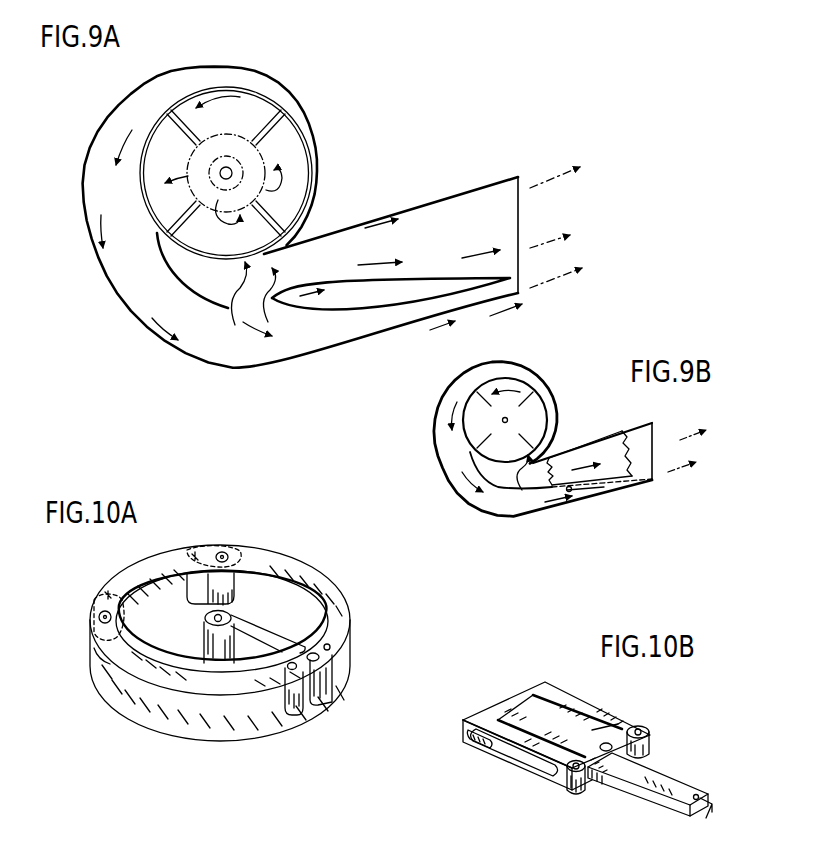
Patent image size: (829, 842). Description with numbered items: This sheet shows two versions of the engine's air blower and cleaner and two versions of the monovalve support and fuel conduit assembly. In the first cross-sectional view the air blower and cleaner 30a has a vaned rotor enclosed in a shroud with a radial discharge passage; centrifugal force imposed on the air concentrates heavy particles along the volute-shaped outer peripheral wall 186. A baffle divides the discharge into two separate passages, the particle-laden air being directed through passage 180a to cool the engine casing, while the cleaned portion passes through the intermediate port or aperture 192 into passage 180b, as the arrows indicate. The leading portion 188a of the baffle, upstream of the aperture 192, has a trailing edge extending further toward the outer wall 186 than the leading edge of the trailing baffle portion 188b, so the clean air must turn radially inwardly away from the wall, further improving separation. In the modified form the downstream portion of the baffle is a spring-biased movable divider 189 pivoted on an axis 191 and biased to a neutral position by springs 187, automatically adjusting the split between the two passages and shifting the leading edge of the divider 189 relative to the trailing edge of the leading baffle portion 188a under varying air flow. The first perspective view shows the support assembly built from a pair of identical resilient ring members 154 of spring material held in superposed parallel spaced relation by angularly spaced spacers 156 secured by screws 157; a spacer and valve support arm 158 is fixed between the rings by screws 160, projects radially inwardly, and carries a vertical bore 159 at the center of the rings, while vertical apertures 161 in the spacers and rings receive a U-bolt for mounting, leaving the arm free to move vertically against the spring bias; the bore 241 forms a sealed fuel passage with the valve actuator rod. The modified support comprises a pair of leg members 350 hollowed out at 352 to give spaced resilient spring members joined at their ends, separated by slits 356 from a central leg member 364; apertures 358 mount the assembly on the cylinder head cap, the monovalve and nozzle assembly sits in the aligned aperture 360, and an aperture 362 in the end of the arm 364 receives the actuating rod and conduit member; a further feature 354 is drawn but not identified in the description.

In FIG. 9A, the blower wheel 30a is at (305, 106).
In FIG. 9A, the passage 180a is at (418, 312).
In FIG. 9B, the passage 180a is at (654, 478).
In FIG. 9A, the passage 180b is at (435, 260).
In FIG. 9B, the passage 180b is at (673, 451).
In FIG. 9A, the outer peripheral wall 186 is at (195, 364).
In FIG. 9A, the leading portion of the baffle 188a is at (188, 290).
In FIG. 9B, the leading portion of the baffle 188a is at (498, 488).
In FIG. 9A, the trailing baffle portion 188b is at (375, 296).
In FIG. 9A, the intermediate port or aperture 192 is at (250, 302).
In FIG. 9B, the springs 187 is at (626, 452).
In FIG. 9B, the spring-biased movable divider 189 is at (603, 488).
In FIG. 9B, the axis 191 is at (571, 492).
In FIG. 10A, the resilient ring members 154 is at (322, 577).
In FIG. 10A, the spacers 156 is at (98, 657).
In FIG. 10A, the screws 157 is at (108, 595).
In FIG. 10A, the spacer and valve support arm 158 is at (245, 652).
In FIG. 10A, the vertical bore 159 is at (205, 626).
In FIG. 10A, the screws 160 is at (347, 698).
In FIG. 10A, the vertical apertures 161 is at (103, 615).
In FIG. 10A, the bore 241 is at (340, 677).
In FIG. 10B, the leg members 350 is at (588, 708).
In FIG. 10B, the hollowed out portion 352 is at (540, 768).
In FIG. 10B, the raised rib 354 is at (592, 730).
In FIG. 10B, the slits 356 is at (500, 718).
In FIG. 10B, the apertures 358 is at (649, 732).
In FIG. 10B, the aperture 360 is at (606, 752).
In FIG. 10B, the aperture 362 is at (712, 793).
In FIG. 10B, the central leg member 364 is at (668, 783).